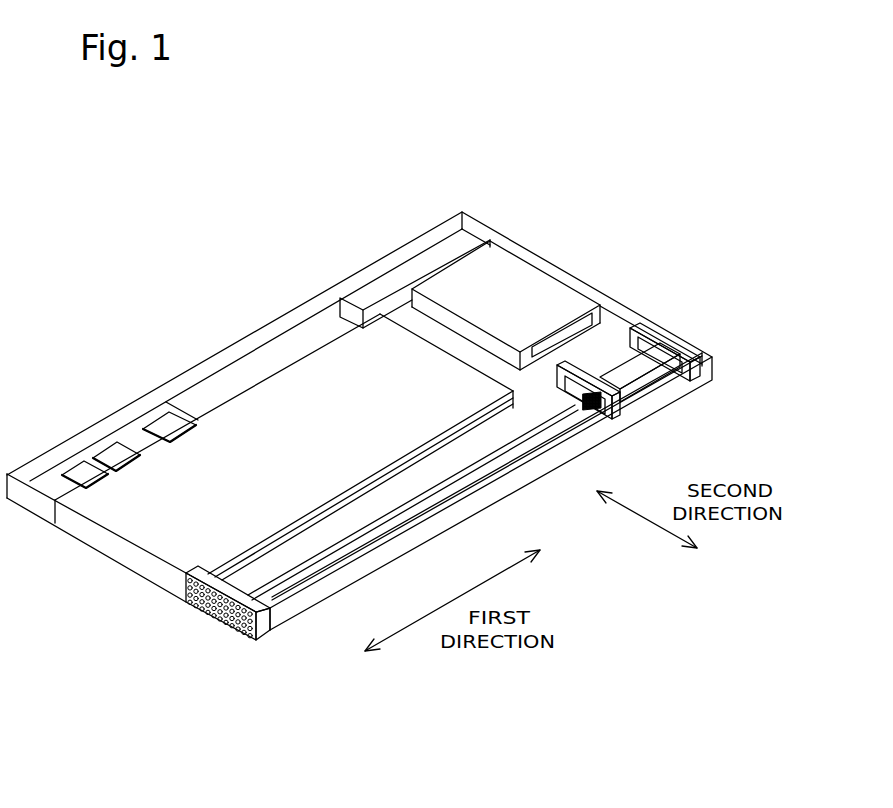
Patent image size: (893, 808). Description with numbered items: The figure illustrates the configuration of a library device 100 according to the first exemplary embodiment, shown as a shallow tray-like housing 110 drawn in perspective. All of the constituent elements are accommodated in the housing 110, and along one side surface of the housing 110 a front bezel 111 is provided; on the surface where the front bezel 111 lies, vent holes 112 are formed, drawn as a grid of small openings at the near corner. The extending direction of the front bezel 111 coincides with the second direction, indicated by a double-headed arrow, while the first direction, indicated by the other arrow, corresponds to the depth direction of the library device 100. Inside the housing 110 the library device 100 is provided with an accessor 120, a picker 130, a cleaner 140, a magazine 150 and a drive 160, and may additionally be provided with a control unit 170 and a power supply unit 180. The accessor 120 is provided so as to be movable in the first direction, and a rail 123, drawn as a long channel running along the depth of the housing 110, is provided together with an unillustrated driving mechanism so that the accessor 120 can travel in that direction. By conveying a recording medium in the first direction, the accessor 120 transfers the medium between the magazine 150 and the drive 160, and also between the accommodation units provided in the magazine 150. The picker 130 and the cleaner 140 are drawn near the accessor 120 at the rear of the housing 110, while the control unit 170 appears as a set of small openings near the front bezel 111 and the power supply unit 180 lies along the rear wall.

The library device 100 is at (427, 160).
The housing 110 is at (248, 382).
The front bezel 111 is at (15, 508).
The vent holes 112 is at (227, 608).
The accessor 120 is at (658, 336).
The rail 123 is at (407, 507).
The picker 130 is at (652, 368).
The cleaner 140 is at (594, 412).
The magazine 150 is at (330, 380).
The drive 160 is at (531, 290).
The control unit 170 is at (137, 442).
The power supply unit 180 is at (468, 240).